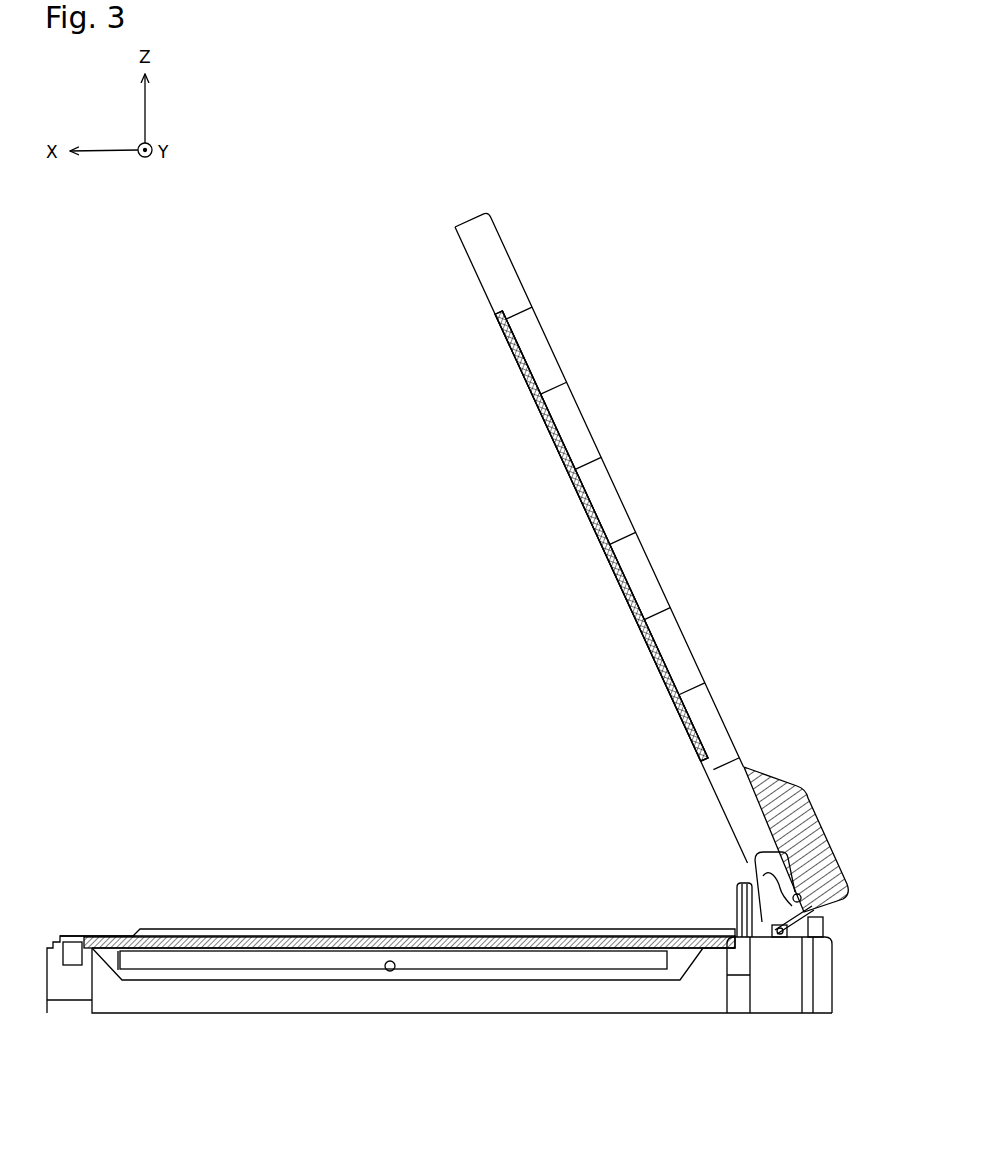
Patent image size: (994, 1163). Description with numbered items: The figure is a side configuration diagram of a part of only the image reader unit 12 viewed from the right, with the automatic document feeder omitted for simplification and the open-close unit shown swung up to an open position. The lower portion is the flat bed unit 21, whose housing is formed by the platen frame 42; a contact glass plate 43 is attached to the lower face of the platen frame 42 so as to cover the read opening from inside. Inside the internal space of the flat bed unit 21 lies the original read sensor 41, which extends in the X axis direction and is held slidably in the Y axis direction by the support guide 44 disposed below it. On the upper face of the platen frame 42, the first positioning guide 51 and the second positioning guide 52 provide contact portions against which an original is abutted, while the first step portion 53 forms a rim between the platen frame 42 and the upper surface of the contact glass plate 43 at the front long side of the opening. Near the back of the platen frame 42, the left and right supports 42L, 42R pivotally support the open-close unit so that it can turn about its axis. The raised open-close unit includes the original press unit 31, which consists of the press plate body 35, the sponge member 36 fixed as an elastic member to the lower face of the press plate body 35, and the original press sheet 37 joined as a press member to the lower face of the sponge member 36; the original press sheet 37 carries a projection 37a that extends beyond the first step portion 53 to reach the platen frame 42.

The image reader unit 12 is at (598, 250).
The flat bed unit 21 is at (258, 1018).
The original press unit 31 is at (625, 470).
The press plate body 35 is at (646, 556).
The sponge member 36 is at (682, 705).
The original press sheet 37 is at (612, 578).
The projection 37a is at (484, 316).
The original read sensor 41 is at (565, 968).
The platen frame 42 is at (125, 937).
The right support 42R is at (733, 905).
The left support 42L is at (744, 910).
The contact glass plate 43 is at (197, 945).
The support guide 44 is at (392, 972).
The first positioning guide 51 is at (636, 932).
The second positioning guide 52 is at (370, 934).
The first step portion 53 is at (143, 929).